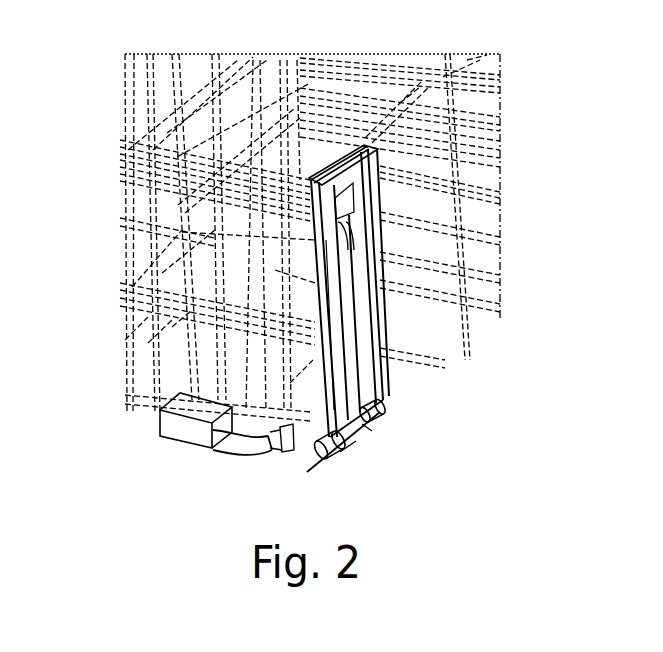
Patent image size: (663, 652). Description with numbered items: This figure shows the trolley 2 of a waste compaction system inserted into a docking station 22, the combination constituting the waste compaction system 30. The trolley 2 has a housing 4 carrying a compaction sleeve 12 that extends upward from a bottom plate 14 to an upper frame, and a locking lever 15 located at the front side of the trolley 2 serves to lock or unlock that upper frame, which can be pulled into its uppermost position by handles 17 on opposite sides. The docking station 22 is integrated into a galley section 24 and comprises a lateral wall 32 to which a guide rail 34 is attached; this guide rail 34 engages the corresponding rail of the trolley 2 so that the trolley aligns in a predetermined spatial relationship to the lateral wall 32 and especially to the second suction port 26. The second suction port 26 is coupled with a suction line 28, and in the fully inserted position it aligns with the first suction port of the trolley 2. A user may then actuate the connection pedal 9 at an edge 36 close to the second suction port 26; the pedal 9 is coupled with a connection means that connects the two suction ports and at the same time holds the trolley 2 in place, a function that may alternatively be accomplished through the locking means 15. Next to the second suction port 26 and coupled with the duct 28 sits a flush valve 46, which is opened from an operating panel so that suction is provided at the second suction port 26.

The trolley 2 is at (433, 145).
The housing 4 is at (382, 380).
The connection pedal 9 is at (370, 430).
The compaction sleeve 12 is at (346, 263).
The bottom plate 14 is at (384, 395).
The locking lever 15 is at (368, 153).
The handles 17 is at (352, 212).
The docking station 22 is at (334, 467).
The galley section 24 is at (495, 177).
The second suction port 26 is at (284, 460).
The suction line 28 is at (230, 448).
The waste compaction system 30 is at (479, 115).
The lateral wall 32 is at (325, 300).
The guide rail 34 is at (236, 182).
The edge 36 is at (365, 440).
The flush valve 46 is at (162, 428).